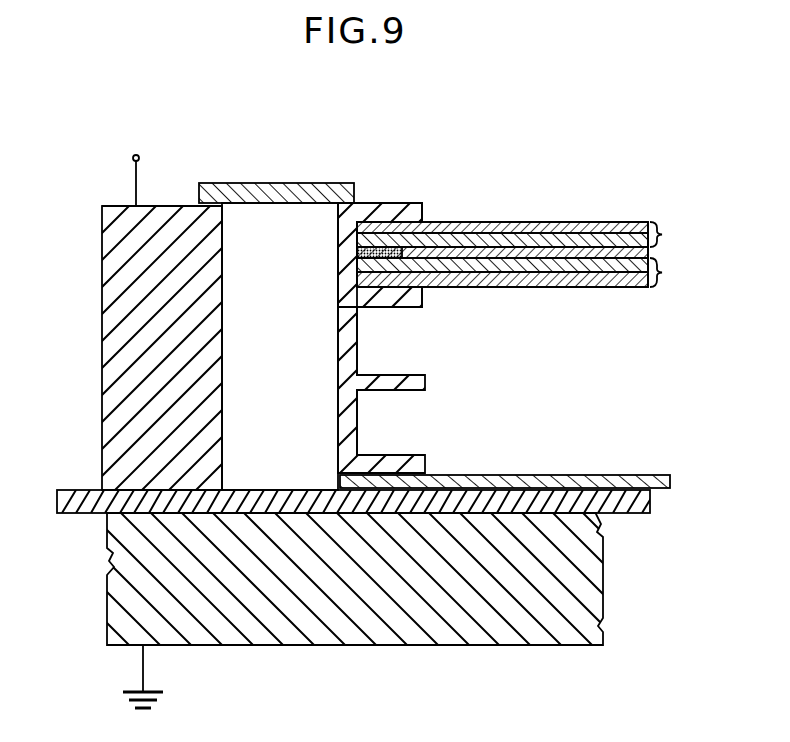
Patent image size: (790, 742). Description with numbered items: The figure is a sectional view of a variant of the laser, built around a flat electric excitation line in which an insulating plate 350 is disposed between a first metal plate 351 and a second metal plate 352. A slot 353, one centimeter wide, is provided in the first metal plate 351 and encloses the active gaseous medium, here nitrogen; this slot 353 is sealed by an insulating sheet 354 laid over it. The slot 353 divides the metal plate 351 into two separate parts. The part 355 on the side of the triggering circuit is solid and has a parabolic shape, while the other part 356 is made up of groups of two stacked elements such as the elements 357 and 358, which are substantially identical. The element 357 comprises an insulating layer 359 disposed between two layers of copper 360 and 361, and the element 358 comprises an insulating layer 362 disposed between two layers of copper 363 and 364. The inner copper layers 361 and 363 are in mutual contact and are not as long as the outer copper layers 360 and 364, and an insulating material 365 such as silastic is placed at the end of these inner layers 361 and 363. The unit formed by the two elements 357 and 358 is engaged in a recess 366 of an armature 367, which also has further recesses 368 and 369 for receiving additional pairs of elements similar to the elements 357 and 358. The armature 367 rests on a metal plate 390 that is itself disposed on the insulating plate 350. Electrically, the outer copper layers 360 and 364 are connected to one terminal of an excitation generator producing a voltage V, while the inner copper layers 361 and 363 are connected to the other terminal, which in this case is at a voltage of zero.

The insulating plate 350 is at (93, 503).
The first metal plate 351 is at (169, 202).
The second metal plate 352 is at (570, 578).
The slot 353 is at (245, 233).
The insulating sheet 354 is at (322, 183).
The solid part of the metal plate 355 is at (130, 315).
The stacked-element part of the metal plate 356 is at (437, 212).
The first stacked element 357 is at (670, 226).
The second stacked element 358 is at (670, 268).
The insulating layer 359 is at (545, 236).
The outer copper layer 360 is at (608, 227).
The inner copper layer 361 is at (476, 241).
The insulating layer 362 is at (530, 287).
The inner copper layer 363 is at (593, 272).
The outer copper layer 364 is at (464, 286).
The insulating material 365 is at (336, 288).
The recess 366 is at (338, 250).
The armature 367 is at (350, 413).
The recess 368 is at (403, 344).
The recess 369 is at (400, 425).
The metal plate 390 is at (630, 475).